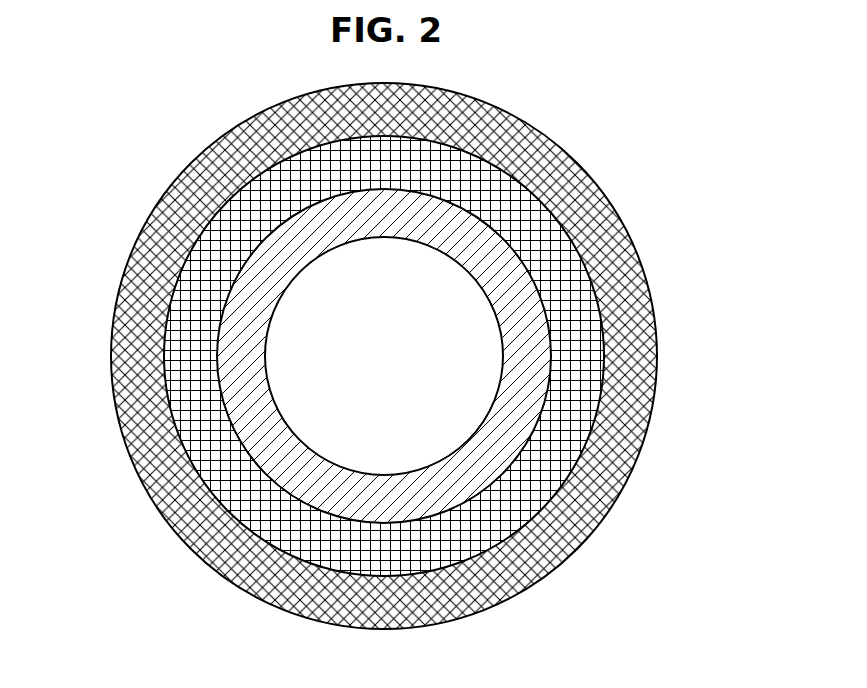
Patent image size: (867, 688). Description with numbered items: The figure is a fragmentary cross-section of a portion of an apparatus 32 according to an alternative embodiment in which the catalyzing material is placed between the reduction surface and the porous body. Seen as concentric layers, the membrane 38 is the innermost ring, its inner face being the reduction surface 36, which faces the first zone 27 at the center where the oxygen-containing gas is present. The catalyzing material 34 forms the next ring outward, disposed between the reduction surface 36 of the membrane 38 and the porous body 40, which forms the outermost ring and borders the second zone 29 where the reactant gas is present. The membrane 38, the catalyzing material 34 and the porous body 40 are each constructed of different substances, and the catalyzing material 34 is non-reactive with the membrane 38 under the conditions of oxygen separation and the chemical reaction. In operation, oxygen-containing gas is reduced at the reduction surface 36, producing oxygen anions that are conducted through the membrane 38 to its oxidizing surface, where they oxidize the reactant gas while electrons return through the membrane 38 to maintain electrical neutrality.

The first zone 27 is at (396, 388).
The second zone 29 is at (93, 445).
The apparatus 32 is at (167, 135).
The catalyzing material 34 is at (572, 297).
The reduction surface 36 is at (480, 302).
The membrane 38 is at (525, 356).
The porous body 40 is at (596, 200).